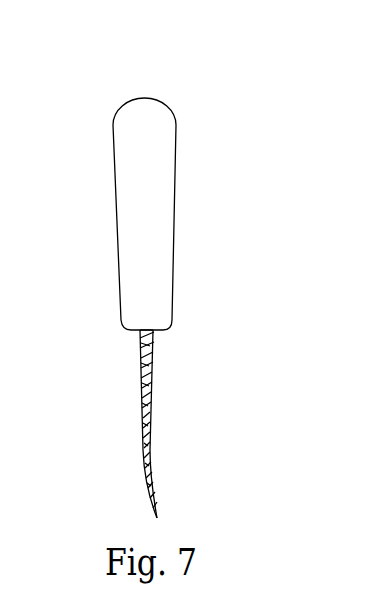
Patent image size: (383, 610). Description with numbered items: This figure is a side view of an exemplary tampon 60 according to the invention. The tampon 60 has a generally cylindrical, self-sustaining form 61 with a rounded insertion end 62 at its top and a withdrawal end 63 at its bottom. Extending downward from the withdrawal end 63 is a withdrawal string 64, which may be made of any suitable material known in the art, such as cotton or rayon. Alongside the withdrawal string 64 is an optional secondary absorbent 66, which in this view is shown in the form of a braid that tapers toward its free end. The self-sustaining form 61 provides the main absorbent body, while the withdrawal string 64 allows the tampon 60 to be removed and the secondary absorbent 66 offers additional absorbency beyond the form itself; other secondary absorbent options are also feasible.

The tampon 60 is at (170, 281).
The self-sustaining form 61 is at (167, 187).
The insertion end 62 is at (142, 98).
The withdrawal end 63 is at (172, 323).
The withdrawal string 64 is at (192, 424).
The secondary absorbent 66 is at (152, 370).